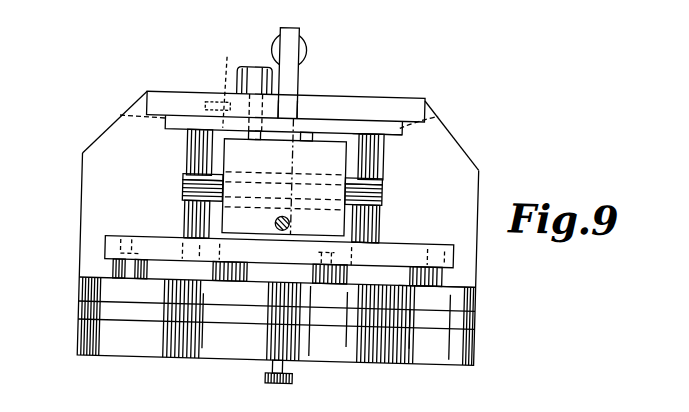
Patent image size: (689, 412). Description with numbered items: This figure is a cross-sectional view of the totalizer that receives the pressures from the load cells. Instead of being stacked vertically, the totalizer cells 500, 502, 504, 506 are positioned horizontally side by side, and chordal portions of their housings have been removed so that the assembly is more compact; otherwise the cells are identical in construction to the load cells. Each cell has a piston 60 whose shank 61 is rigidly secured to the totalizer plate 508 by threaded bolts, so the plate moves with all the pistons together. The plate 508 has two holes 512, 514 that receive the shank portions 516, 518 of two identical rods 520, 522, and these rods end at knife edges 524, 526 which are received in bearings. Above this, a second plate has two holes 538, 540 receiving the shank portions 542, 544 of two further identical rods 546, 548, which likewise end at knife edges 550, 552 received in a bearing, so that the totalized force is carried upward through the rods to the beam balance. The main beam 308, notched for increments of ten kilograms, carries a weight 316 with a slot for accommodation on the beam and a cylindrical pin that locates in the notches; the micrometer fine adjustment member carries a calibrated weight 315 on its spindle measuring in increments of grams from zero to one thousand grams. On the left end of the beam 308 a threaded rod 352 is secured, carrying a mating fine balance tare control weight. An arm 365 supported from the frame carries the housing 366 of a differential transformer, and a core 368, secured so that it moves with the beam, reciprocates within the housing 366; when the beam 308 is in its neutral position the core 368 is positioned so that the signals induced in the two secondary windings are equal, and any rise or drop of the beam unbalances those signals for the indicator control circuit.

The totalizer cell 500 is at (103, 338).
The totalizer cell 502 is at (230, 346).
The totalizer cell 504 is at (328, 346).
The totalizer cell 506 is at (428, 346).
The totalizer plate 508 is at (105, 244).
The hole 512 is at (190, 242).
The hole 514 is at (366, 248).
The shank portion 516 is at (178, 236).
The shank portion 518 is at (380, 240).
The rod 520 is at (184, 207).
The rod 522 is at (380, 207).
The knife edge 524 is at (187, 189).
The knife edge 526 is at (381, 190).
The hole 538 is at (197, 114).
The hole 540 is at (379, 114).
The shank portion 542 is at (124, 123).
The shank portion 544 is at (433, 101).
The rod 546 is at (192, 140).
The rod 548 is at (381, 145).
The knife edge 550 is at (182, 179).
The knife edge 552 is at (382, 180).
The main beam 308 is at (295, 149).
The calibrated weight 315 is at (302, 44).
The weight 316 is at (302, 126).
The threaded rod 352 is at (274, 219).
The arm 365 is at (225, 83).
The housing 366 is at (246, 63).
The core 368 is at (294, 82).
The piston 60 is at (446, 270).
The shank 61 is at (448, 262).